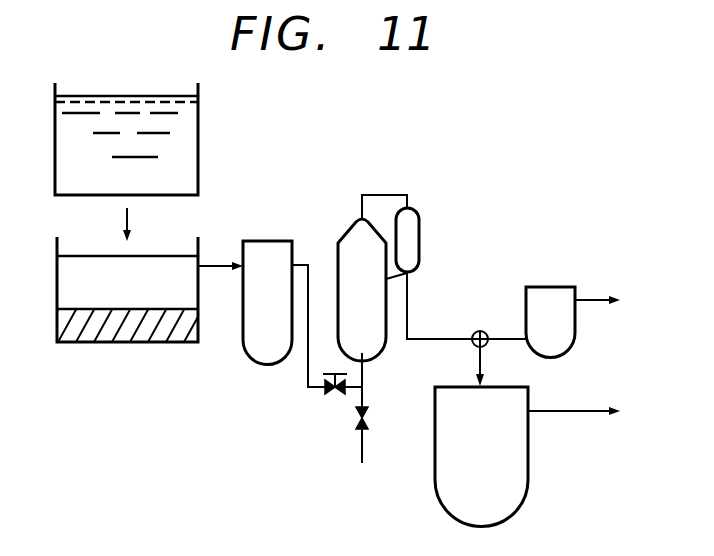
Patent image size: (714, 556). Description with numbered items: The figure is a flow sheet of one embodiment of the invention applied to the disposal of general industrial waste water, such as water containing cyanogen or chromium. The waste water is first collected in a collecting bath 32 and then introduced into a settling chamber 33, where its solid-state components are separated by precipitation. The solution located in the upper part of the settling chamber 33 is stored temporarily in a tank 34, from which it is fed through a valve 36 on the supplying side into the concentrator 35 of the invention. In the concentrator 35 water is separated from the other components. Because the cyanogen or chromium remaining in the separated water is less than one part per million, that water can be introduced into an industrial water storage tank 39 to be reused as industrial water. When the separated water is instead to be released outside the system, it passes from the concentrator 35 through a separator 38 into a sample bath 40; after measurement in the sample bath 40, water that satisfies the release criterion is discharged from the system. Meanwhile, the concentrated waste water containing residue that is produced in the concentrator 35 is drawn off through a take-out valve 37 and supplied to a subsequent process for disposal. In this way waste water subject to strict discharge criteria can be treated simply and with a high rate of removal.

The collecting bath 32 is at (186, 117).
The settling chamber 33 is at (166, 262).
The tank 34 is at (267, 350).
The concentrator 35 is at (345, 243).
The valve on the supplying side 36 is at (336, 395).
The take-out valve 37 is at (372, 420).
The separator 38 is at (480, 330).
The industrial water storage tank 39 is at (513, 457).
The sample bath 40 is at (551, 300).